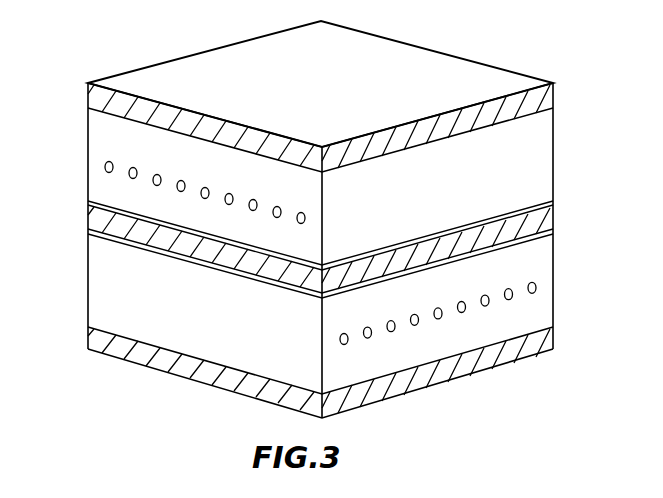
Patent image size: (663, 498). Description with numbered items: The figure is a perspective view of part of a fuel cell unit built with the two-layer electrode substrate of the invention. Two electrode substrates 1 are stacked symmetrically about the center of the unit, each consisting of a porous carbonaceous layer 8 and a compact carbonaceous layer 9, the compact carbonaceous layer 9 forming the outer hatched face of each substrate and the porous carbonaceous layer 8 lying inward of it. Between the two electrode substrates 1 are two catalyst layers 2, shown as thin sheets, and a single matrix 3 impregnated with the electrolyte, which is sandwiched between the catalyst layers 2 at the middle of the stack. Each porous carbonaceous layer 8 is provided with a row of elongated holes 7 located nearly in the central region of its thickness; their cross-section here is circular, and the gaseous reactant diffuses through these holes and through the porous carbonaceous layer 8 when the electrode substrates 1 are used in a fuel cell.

The electrode substrate 1 is at (82, 83).
The catalyst layer 2 is at (553, 199).
The matrix 3 is at (543, 221).
The elongated hole 7 is at (134, 167).
The porous carbonaceous layer 8 is at (553, 165).
The compact carbonaceous layer 9 is at (546, 95).